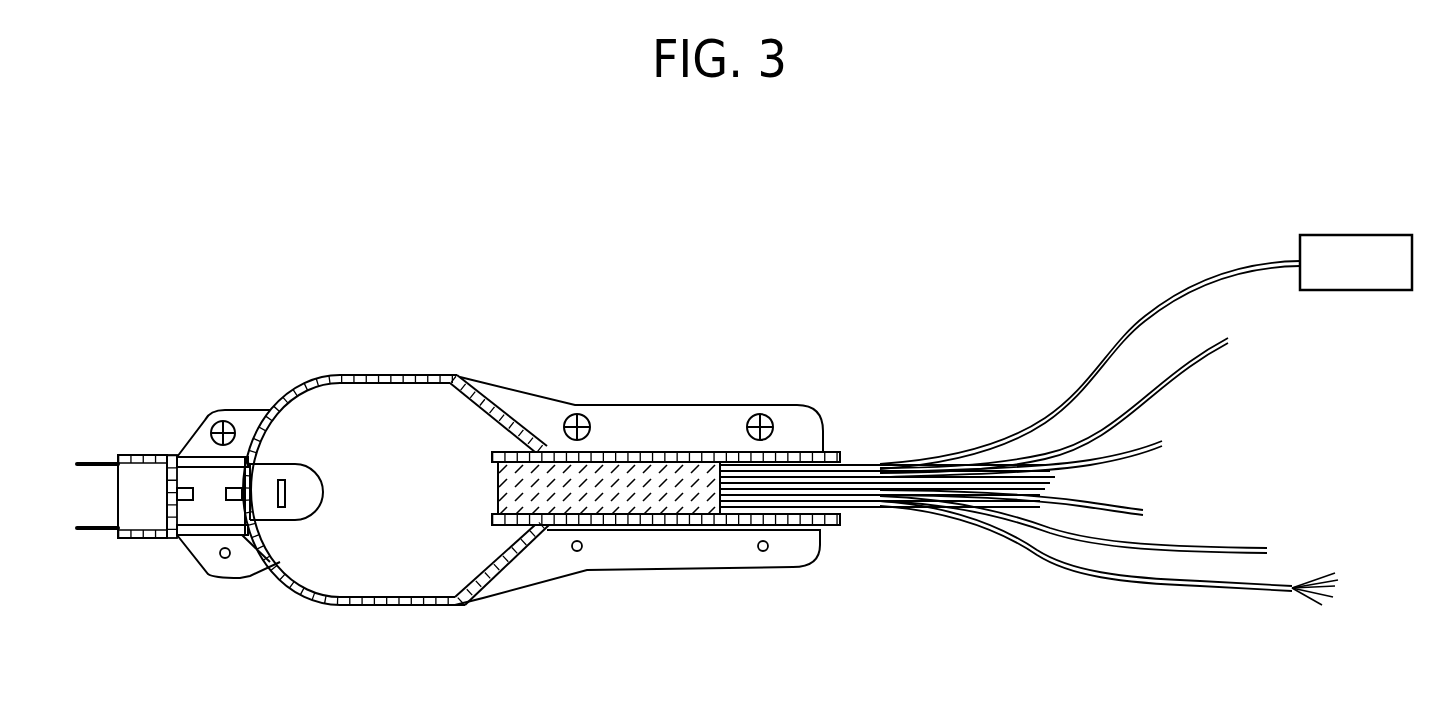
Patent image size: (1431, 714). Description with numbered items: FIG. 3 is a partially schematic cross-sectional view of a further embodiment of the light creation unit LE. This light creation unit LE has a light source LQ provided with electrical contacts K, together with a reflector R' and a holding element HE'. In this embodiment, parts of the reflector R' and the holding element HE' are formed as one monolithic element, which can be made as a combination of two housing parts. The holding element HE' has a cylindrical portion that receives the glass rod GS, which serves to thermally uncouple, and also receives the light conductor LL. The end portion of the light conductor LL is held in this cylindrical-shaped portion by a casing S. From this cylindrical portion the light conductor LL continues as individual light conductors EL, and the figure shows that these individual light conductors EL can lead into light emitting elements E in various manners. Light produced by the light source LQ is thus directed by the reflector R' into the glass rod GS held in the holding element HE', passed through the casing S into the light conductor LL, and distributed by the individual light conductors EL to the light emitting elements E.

The electrical contacts K is at (90, 463).
The light creation unit LE is at (380, 345).
The light source LQ is at (307, 497).
The reflector R' is at (396, 522).
The holding element HE' is at (639, 462).
The casing S is at (787, 530).
The glass rod GS is at (620, 465).
The light conductor LL is at (853, 487).
The individual light conductors EL is at (1137, 320).
The light emitting elements E is at (1318, 248).